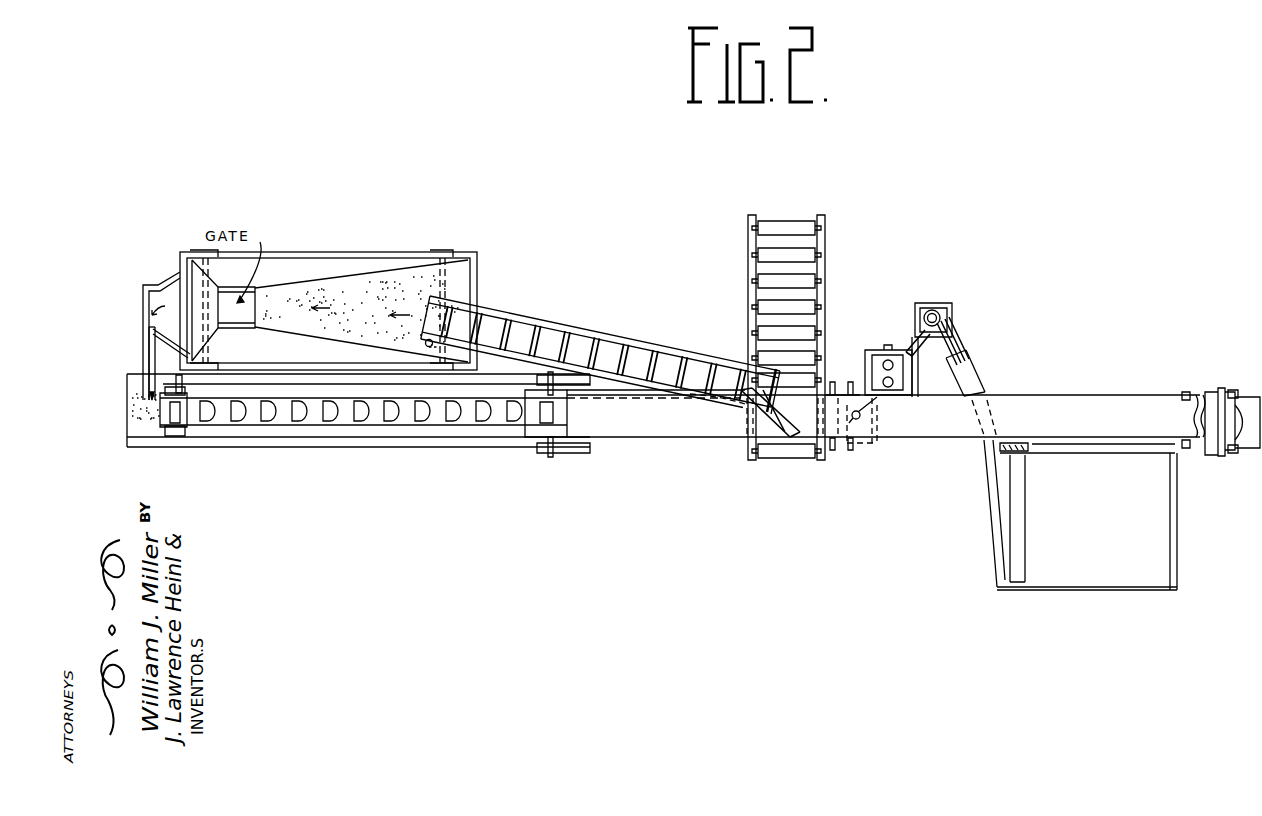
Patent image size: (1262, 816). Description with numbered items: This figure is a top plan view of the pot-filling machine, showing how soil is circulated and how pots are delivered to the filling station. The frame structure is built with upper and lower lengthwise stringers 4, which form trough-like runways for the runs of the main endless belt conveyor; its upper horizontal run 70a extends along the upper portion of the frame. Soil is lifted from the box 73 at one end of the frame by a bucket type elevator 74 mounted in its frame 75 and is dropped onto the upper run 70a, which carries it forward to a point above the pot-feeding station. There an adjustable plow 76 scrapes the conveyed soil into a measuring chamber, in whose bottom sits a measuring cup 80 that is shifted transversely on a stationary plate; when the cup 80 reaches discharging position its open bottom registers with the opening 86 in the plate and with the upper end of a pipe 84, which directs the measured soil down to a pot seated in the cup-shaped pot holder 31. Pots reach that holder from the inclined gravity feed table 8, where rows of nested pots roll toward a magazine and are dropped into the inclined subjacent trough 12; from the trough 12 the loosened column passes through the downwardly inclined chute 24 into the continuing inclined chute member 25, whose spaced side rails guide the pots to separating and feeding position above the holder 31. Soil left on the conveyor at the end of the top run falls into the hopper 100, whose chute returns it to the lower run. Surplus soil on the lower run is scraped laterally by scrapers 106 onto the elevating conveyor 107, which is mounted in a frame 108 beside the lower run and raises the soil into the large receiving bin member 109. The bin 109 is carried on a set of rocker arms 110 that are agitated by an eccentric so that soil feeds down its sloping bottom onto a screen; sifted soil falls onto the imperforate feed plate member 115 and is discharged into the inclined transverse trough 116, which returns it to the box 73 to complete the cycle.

The stringers 4 is at (710, 440).
The inclined gravity feed table 8 is at (1088, 523).
The inclined subjacent trough 12 is at (990, 538).
The downwardly inclined chute 24 is at (968, 370).
The inclined chute member 25 is at (963, 344).
The pot holder 31 is at (950, 308).
The upper horizontal run 70a is at (640, 418).
The box 73 is at (137, 410).
The bucket type elevator 74 is at (377, 420).
The frame 75 is at (427, 447).
The plow 76 is at (862, 414).
The measuring cup 80 is at (869, 378).
The pipe 84 is at (910, 352).
The opening 86 is at (870, 353).
The hopper 100 is at (1248, 403).
The scrapers 106 is at (795, 437).
The conveyor 107 is at (650, 327).
The frame 108 is at (573, 303).
The receiving bin member 109 is at (375, 238).
The rocker arms 110 is at (195, 250).
The feed plate member 115 is at (178, 274).
The trough 116 is at (141, 353).